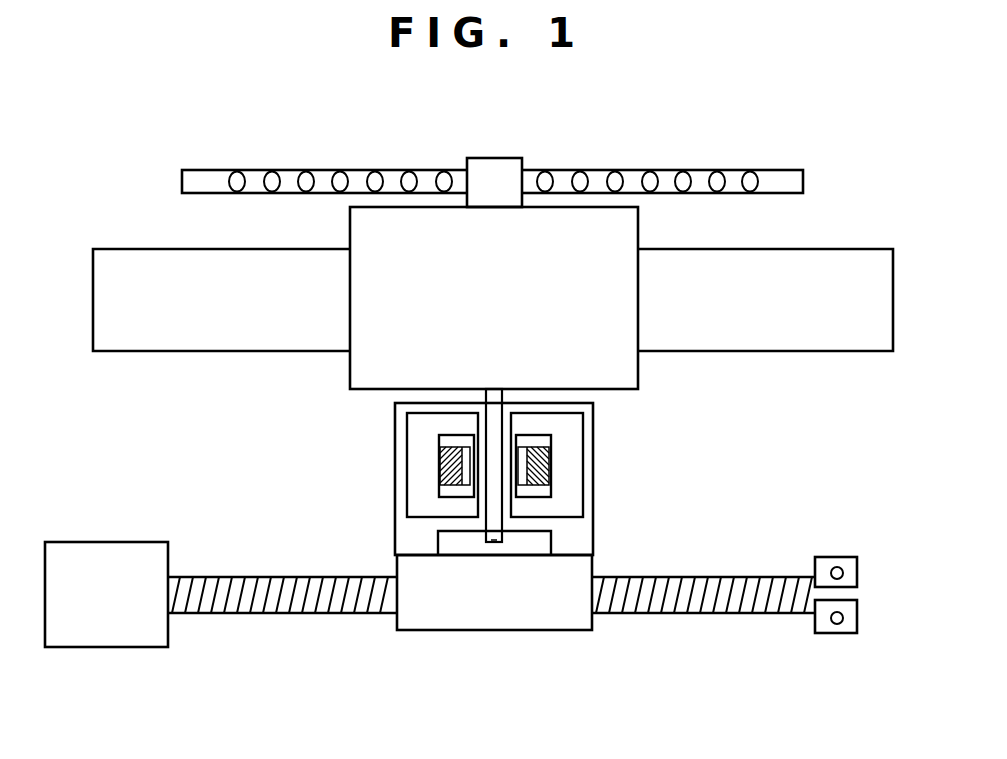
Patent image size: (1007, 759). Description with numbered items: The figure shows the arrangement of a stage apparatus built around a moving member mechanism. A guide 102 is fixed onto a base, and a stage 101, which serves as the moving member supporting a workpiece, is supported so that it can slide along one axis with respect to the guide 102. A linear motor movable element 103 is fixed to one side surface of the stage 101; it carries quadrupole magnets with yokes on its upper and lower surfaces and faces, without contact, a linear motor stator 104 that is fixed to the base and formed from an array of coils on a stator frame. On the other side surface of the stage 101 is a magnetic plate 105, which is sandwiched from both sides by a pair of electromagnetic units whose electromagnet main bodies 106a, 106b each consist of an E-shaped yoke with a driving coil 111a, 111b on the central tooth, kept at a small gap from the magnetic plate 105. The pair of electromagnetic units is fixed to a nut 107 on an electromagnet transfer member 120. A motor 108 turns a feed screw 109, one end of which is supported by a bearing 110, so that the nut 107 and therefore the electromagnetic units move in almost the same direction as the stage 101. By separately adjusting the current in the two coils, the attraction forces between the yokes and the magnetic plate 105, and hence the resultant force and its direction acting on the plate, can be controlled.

The stage 101 is at (628, 373).
The guide 102 is at (850, 249).
The linear motor movable element 103 is at (495, 158).
The linear motor stator 104 is at (212, 170).
The magnetic plate 105 is at (494, 543).
The electromagnet main body 106a is at (423, 425).
The electromagnet main body 106b is at (565, 425).
The nut 107 is at (422, 618).
The motor 108 is at (108, 647).
The feed screw 109 is at (682, 590).
The bearing 110 is at (843, 597).
The coil 111a is at (447, 476).
The coil 111b is at (543, 476).
The electromagnet transfer member 120 is at (605, 452).